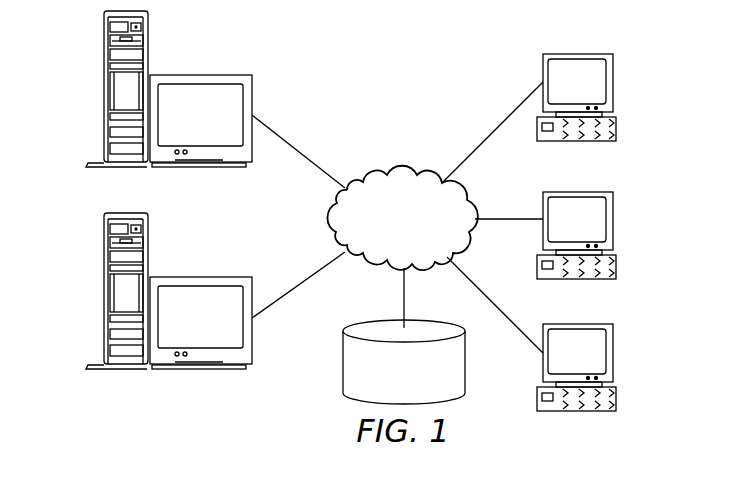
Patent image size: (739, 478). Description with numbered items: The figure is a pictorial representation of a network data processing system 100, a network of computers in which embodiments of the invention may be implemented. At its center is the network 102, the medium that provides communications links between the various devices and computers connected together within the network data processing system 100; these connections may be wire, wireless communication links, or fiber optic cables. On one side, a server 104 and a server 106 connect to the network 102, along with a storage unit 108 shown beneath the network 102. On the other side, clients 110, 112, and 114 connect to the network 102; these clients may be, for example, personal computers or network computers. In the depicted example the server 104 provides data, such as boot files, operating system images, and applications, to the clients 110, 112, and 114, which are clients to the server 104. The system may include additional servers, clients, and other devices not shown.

The network data processing system 100 is at (451, 64).
The network 102 is at (376, 172).
The server 104 is at (104, 90).
The server 106 is at (145, 308).
The storage unit 108 is at (343, 370).
The client 110 is at (613, 82).
The client 112 is at (606, 248).
The client 114 is at (606, 380).